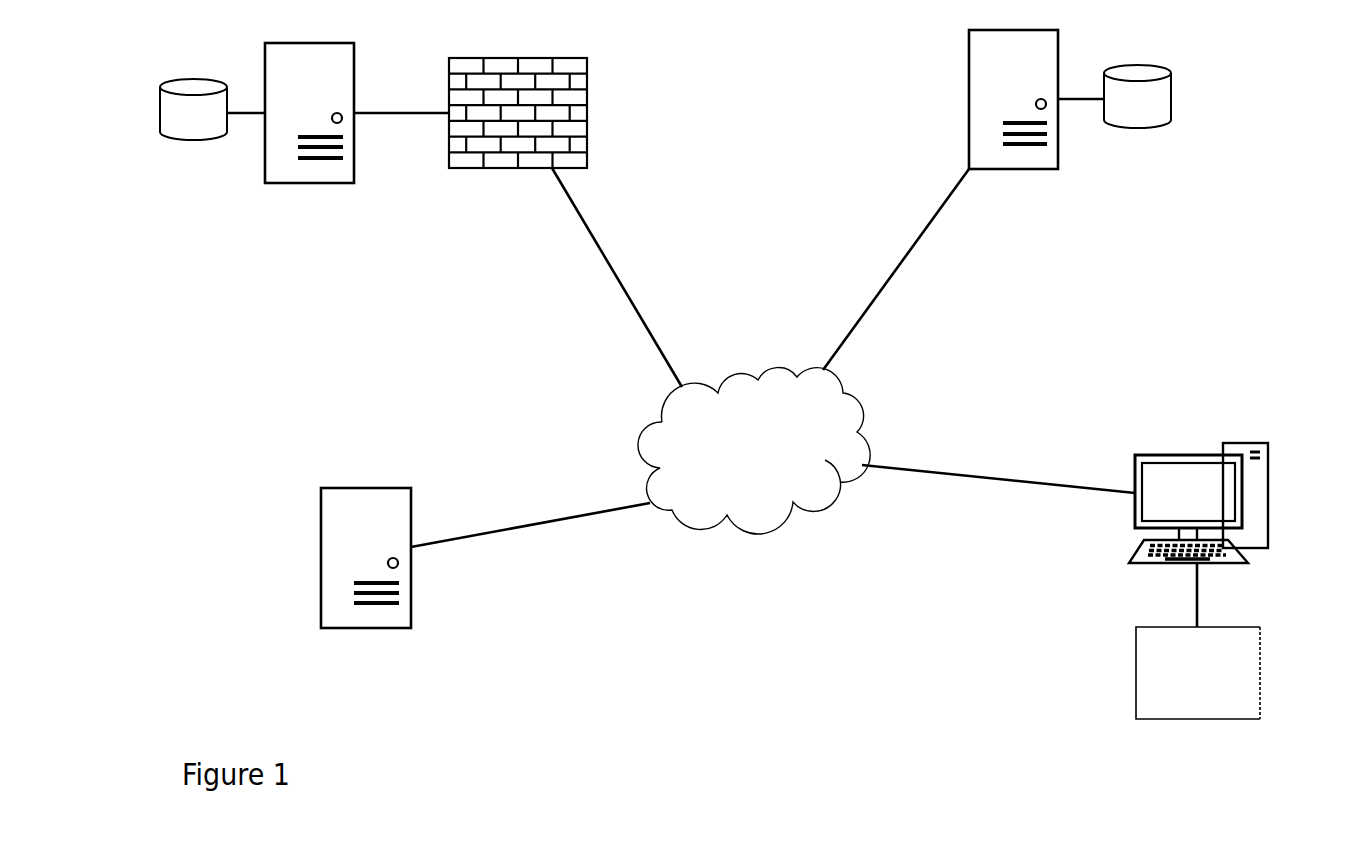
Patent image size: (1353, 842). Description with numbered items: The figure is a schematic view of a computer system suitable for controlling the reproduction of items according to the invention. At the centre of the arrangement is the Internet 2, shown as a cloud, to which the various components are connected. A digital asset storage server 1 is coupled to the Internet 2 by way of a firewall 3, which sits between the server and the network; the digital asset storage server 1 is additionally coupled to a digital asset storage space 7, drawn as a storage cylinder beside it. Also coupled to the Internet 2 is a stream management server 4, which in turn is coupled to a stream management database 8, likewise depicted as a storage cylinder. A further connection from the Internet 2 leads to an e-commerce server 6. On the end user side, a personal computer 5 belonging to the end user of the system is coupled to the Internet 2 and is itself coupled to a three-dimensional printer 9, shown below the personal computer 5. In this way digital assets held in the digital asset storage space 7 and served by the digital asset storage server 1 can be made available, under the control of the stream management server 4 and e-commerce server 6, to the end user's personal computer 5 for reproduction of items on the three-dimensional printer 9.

The digital asset storage server 1 is at (279, 167).
The Internet 2 is at (756, 511).
The firewall 3 is at (472, 162).
The stream management server 4 is at (987, 72).
The personal computer 5 is at (1257, 502).
The e-commerce server 6 is at (354, 506).
The digital asset storage space 7 is at (177, 135).
The stream management database 8 is at (1160, 122).
The 3D printer 9 is at (1247, 699).